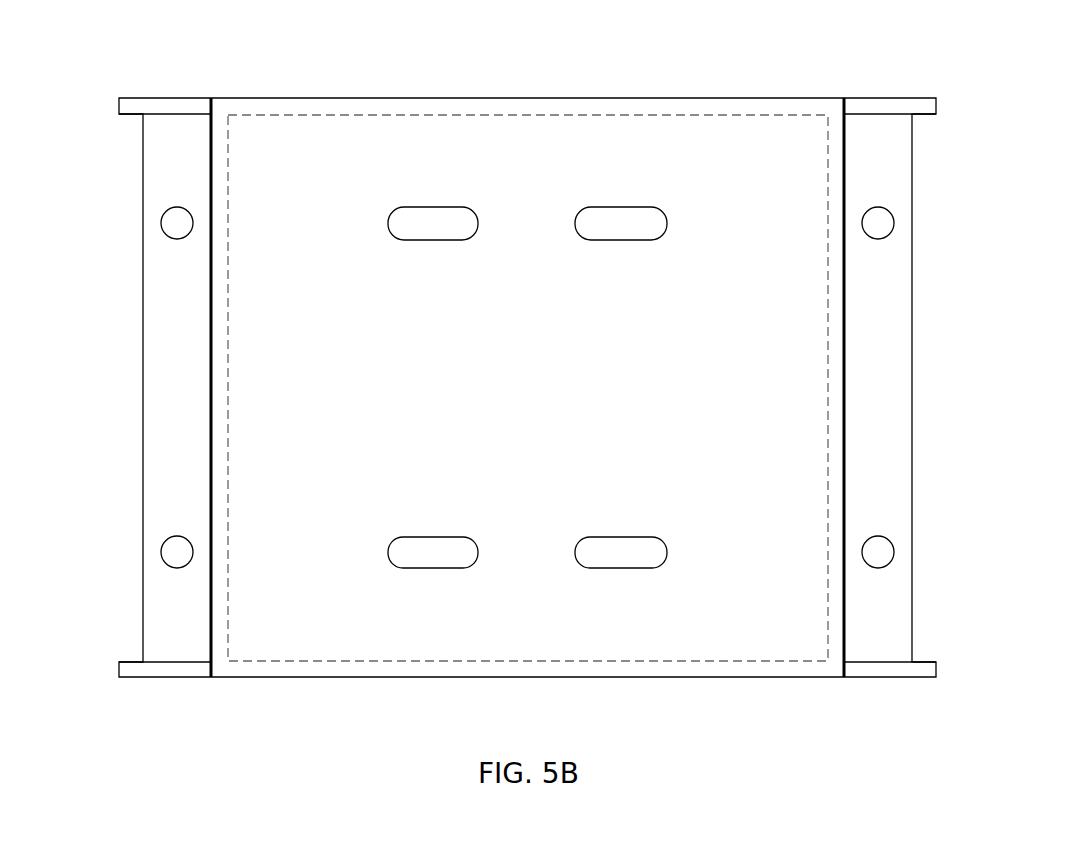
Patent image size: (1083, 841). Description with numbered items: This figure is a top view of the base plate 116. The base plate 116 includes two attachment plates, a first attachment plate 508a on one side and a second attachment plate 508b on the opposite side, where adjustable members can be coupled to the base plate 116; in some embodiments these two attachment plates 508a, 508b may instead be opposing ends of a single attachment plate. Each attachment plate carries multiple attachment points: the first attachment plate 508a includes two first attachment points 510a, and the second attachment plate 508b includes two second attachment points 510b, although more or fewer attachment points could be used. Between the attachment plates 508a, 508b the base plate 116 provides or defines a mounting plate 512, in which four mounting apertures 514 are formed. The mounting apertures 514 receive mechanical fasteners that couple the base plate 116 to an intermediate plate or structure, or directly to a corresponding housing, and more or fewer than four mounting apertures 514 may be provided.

The base plate 116 is at (616, 84).
The mounting plate 512 is at (319, 135).
The first attachment plate 508a is at (160, 167).
The second attachment plate 508b is at (900, 158).
The first attachment points 510a is at (168, 225).
The second attachment points 510b is at (886, 224).
The mounting apertures 514 is at (592, 233).